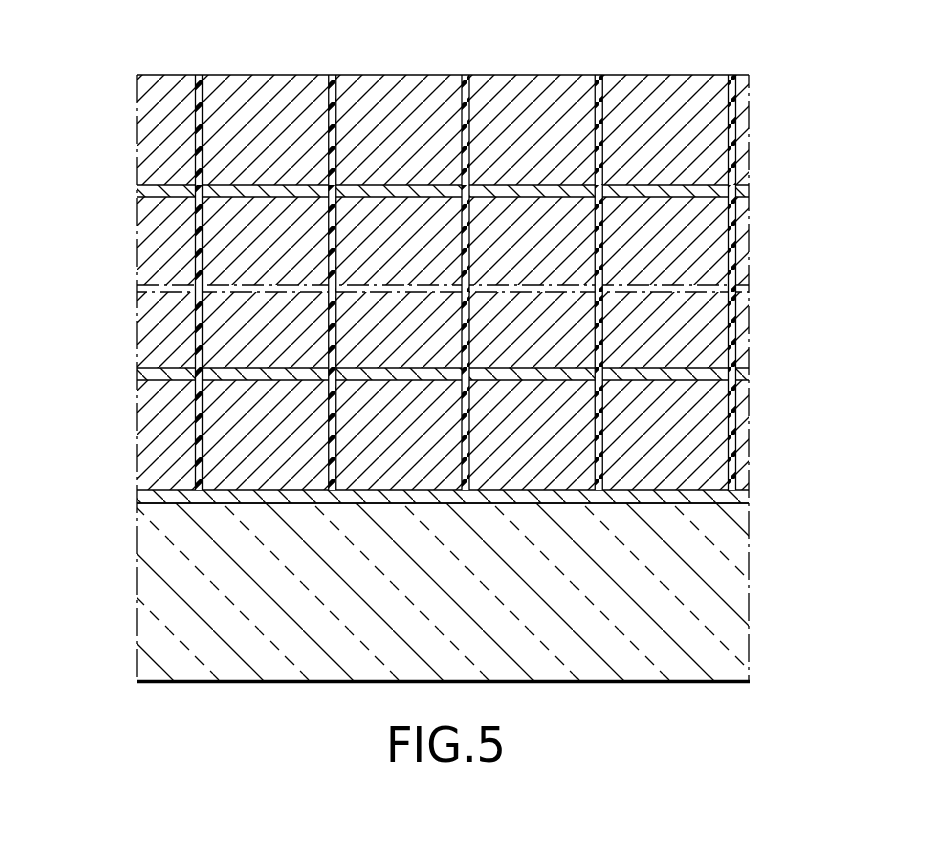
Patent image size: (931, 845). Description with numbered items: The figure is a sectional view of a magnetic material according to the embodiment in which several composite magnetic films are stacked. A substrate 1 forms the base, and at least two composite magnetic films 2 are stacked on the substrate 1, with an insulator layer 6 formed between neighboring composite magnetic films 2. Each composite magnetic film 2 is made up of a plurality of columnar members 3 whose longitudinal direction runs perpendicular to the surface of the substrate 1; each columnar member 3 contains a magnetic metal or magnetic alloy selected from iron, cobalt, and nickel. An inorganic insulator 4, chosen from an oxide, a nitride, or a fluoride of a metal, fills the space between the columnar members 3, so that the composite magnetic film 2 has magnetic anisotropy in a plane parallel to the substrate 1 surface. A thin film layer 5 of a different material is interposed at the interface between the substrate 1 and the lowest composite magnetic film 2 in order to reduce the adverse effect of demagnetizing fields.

The substrate 1 is at (745, 606).
The composite magnetic film 2 is at (752, 138).
The columnar member 3 is at (171, 82).
The inorganic insulator 4 is at (731, 75).
The thin film layer 5 is at (742, 496).
The insulator layer 6 is at (742, 192).